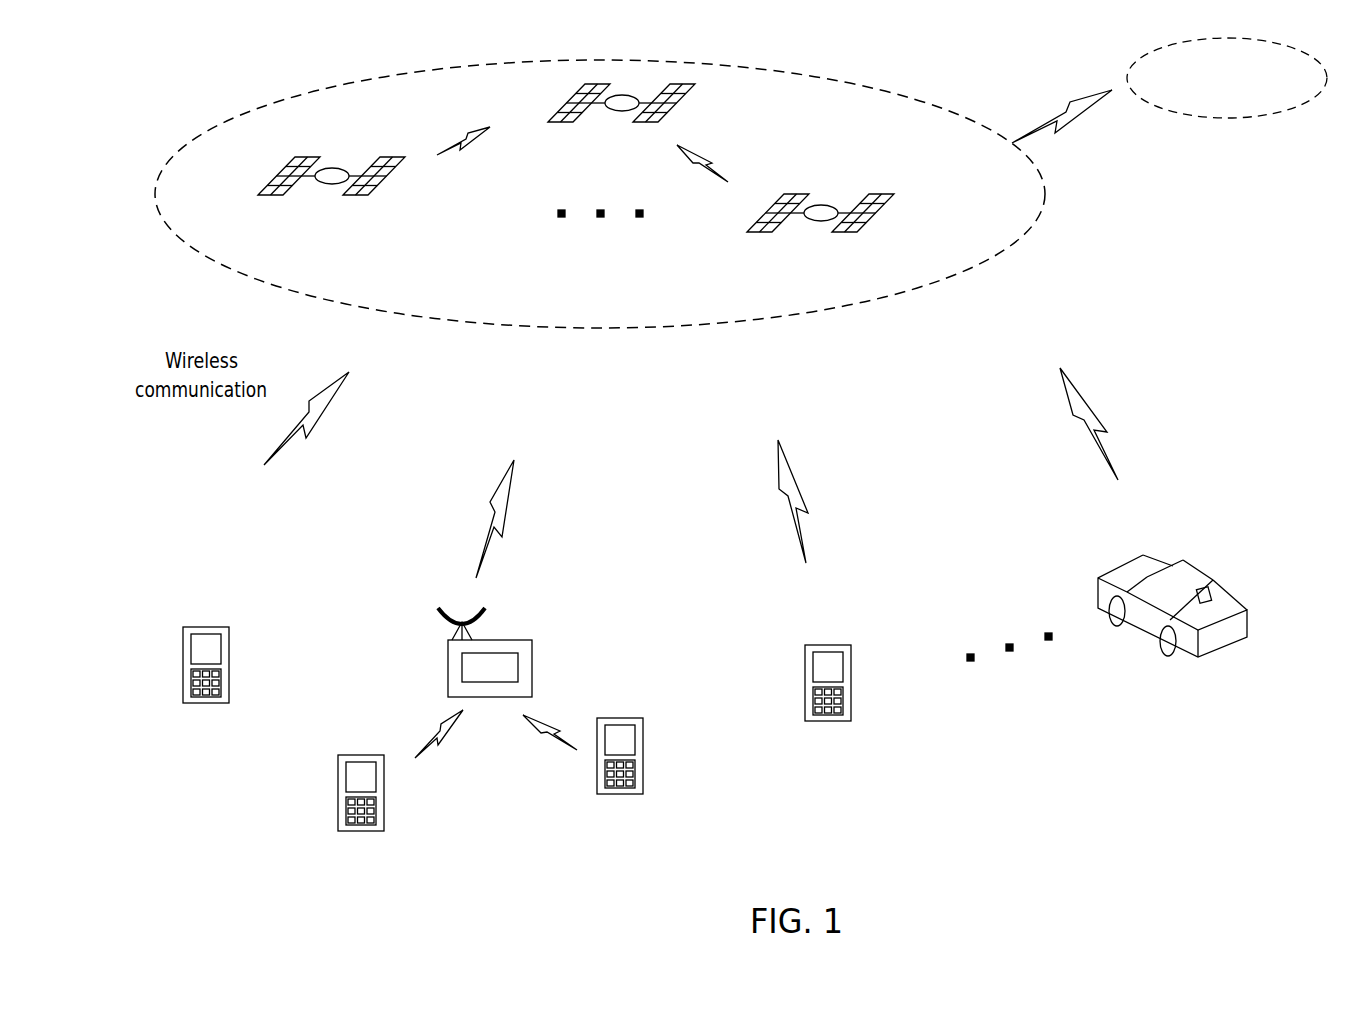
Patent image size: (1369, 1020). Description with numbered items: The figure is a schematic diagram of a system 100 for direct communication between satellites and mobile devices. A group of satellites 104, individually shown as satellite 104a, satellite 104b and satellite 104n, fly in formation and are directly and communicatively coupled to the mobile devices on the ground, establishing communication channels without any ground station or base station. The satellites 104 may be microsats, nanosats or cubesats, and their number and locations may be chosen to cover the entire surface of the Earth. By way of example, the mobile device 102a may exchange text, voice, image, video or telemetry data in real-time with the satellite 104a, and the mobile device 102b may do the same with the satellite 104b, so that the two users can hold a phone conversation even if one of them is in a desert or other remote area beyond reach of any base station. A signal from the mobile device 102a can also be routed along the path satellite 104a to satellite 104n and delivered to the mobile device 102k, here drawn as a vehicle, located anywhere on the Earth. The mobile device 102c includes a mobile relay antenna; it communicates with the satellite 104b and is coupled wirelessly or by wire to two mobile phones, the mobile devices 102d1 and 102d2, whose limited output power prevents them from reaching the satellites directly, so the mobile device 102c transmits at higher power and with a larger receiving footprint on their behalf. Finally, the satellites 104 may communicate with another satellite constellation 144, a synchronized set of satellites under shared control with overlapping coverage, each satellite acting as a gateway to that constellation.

The system 100 is at (110, 68).
The satellites 104 is at (832, 78).
The satellite 104a is at (393, 172).
The satellite 104b is at (683, 99).
The satellite 104n is at (882, 209).
The satellite constellation 144 is at (1148, 53).
The mobile device 102a is at (210, 627).
The mobile device 102b is at (830, 645).
The mobile device 102c is at (513, 640).
The mobile device 102d1 is at (622, 718).
The mobile device 102d2 is at (365, 755).
The mobile device 102k is at (1200, 570).